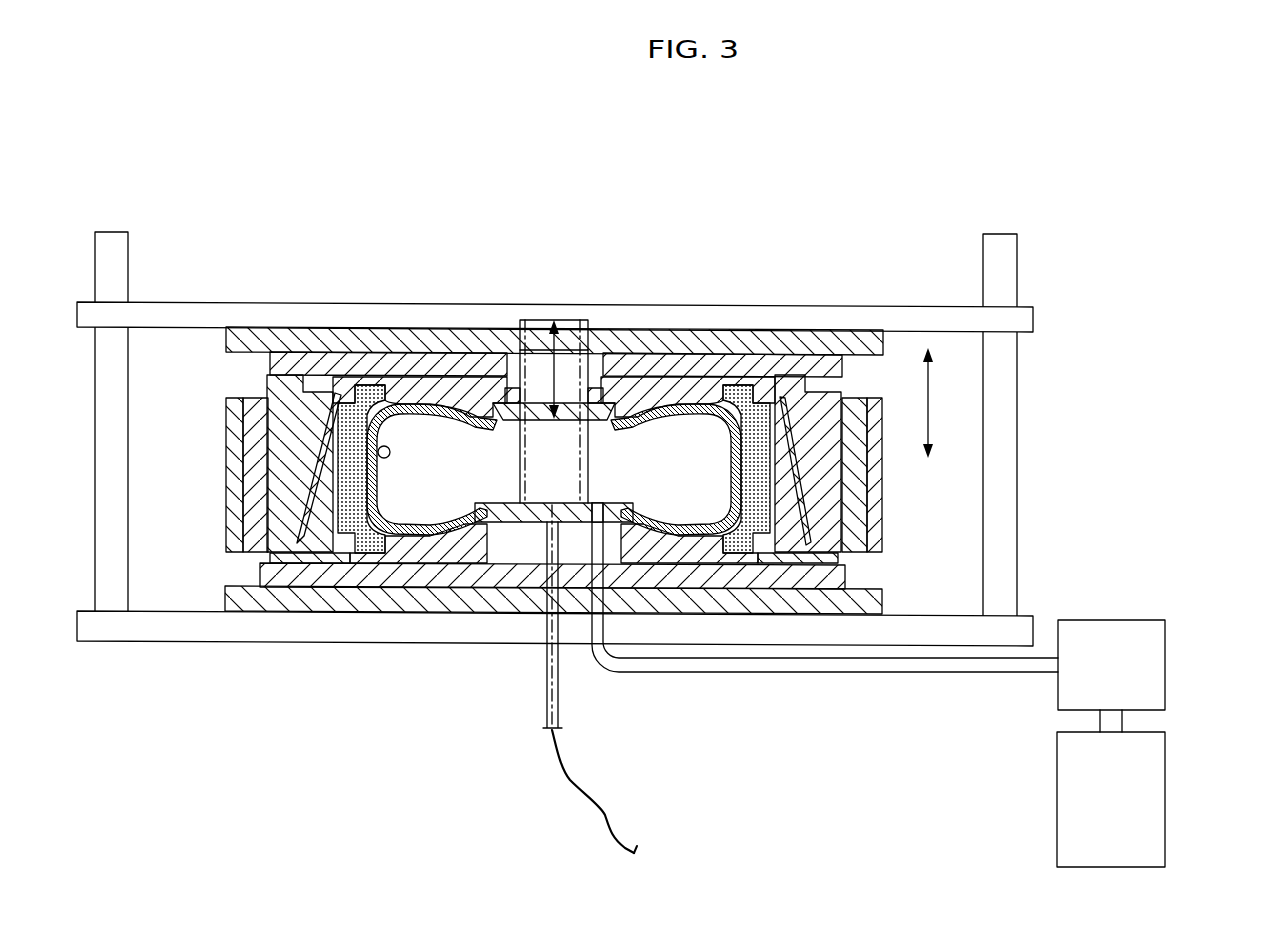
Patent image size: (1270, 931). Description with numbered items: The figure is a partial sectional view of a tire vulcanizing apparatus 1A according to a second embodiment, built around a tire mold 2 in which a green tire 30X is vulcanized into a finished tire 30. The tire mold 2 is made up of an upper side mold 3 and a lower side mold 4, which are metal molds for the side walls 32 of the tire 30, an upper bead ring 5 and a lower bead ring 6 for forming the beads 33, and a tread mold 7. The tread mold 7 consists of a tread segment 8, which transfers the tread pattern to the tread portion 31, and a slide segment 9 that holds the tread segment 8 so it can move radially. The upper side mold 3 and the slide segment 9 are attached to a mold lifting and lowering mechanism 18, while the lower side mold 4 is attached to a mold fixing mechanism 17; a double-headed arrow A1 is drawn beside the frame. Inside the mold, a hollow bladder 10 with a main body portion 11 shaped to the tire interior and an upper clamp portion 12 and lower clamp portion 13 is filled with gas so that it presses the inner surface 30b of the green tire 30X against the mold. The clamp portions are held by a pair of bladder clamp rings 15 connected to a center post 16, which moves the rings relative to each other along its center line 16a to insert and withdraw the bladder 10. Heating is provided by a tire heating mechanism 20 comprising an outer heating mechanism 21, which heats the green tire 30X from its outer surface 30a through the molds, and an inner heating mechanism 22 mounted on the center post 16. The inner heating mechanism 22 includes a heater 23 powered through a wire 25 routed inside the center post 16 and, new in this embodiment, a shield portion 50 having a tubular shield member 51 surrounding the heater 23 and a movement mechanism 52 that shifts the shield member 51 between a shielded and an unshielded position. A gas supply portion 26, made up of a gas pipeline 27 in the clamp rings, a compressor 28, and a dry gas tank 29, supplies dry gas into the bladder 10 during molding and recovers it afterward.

The tire vulcanizing apparatus 1A is at (755, 226).
The tire mold 2 is at (720, 369).
The upper side mold 3 is at (683, 397).
The lower side mold 4 is at (697, 545).
The upper bead ring 5 is at (613, 403).
The lower bead ring 6 is at (632, 527).
The tread mold 7 is at (753, 627).
The tread segment 8 is at (757, 500).
The slide segment 9 is at (790, 512).
The bladder 10 is at (546, 358).
The main body portion 11 is at (403, 518).
The upper clamp portion 12 is at (430, 515).
The lower clamp portion 13 is at (450, 513).
The bladder clamp rings 15 is at (590, 600).
The center post 16 is at (567, 666).
The center line 16a is at (548, 732).
The mold fixing mechanism 17 is at (883, 628).
The mold lifting and lowering mechanism 18 is at (248, 313).
The tire heating mechanism 20 is at (621, 483).
The outer heating mechanism 21 is at (323, 337).
The inner heating mechanism 22 is at (540, 418).
The heater 23 is at (545, 480).
The wire 25 is at (605, 807).
The gas supply portion 26 is at (1120, 678).
The gas pipeline 27 is at (1033, 663).
The compressor 28 is at (1110, 637).
The dry gas tank 29 is at (1148, 783).
The tire 30 is at (495, 569).
The green tire 30X is at (550, 569).
The outer surface 30a is at (367, 453).
The inner surface 30b is at (367, 440).
The tread portion 31 is at (363, 468).
The side walls 32 is at (432, 532).
The beads 33 is at (400, 538).
The shield portion 50 is at (568, 457).
The shield member 51 is at (580, 330).
The movement mechanism 52 is at (592, 385).
The pressing direction A1 is at (928, 403).